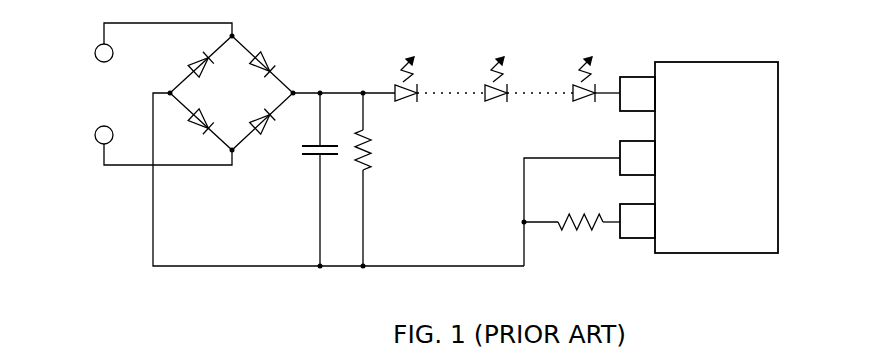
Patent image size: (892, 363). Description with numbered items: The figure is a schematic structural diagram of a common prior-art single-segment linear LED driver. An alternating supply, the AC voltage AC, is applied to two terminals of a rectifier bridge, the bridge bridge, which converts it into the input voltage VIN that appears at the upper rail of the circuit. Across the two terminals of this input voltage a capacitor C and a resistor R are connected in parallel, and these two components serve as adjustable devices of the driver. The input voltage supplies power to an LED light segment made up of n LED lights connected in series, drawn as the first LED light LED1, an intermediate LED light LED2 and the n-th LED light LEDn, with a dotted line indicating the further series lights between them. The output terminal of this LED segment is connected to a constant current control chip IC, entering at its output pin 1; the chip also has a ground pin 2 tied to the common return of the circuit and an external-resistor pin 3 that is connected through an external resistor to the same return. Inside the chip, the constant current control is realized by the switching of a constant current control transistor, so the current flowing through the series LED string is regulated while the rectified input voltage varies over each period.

The AC voltage AC is at (161, 94).
The rectifier bridge is at (338, 150).
The input voltage VIN is at (344, 73).
The capacitor C is at (312, 180).
The resistor R is at (371, 180).
The first LED light LED1 is at (436, 94).
The intermediate LED light LED2 is at (529, 79).
The n-th LED light LEDn is at (595, 94).
The constant current control chip IC is at (716, 157).
The OUT pin 1 is at (637, 94).
The GND pin 2 is at (589, 203).
The REXT pin 3 is at (589, 221).